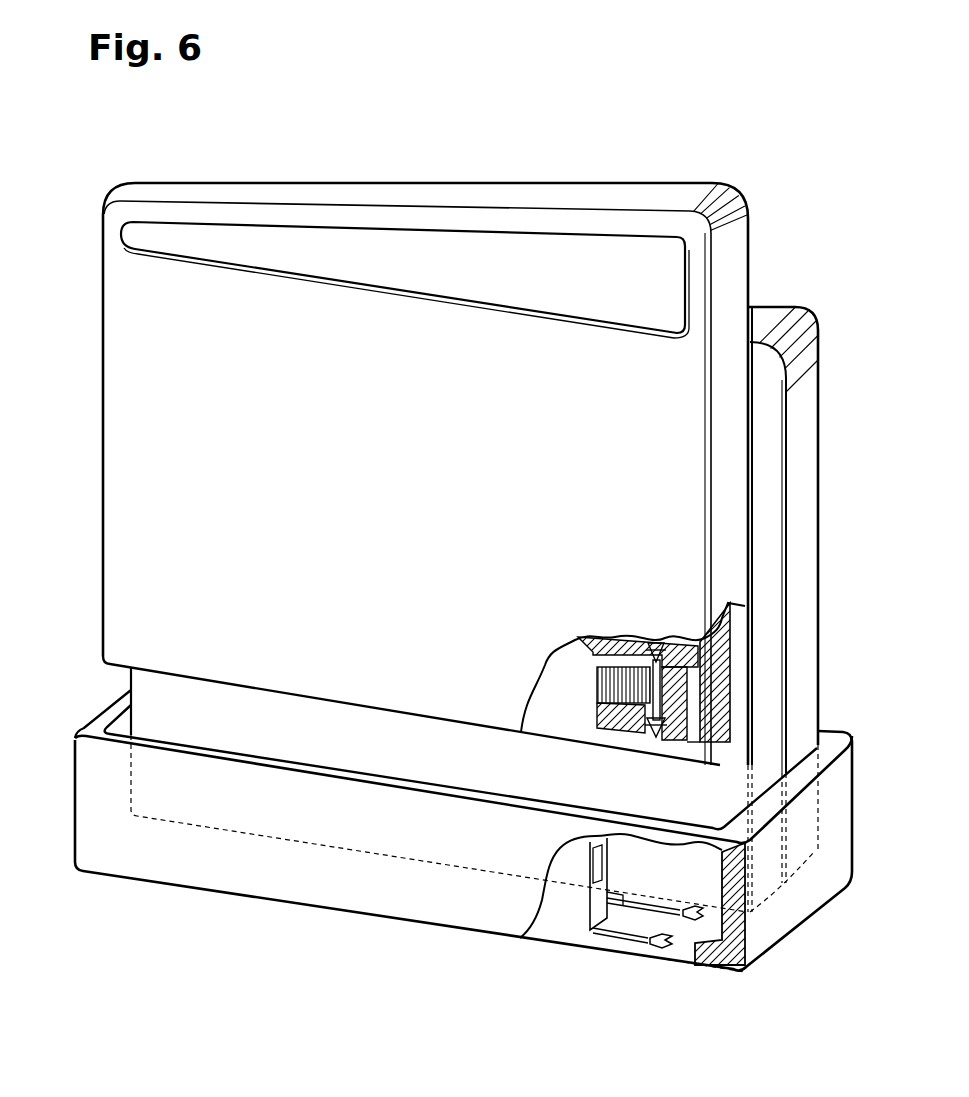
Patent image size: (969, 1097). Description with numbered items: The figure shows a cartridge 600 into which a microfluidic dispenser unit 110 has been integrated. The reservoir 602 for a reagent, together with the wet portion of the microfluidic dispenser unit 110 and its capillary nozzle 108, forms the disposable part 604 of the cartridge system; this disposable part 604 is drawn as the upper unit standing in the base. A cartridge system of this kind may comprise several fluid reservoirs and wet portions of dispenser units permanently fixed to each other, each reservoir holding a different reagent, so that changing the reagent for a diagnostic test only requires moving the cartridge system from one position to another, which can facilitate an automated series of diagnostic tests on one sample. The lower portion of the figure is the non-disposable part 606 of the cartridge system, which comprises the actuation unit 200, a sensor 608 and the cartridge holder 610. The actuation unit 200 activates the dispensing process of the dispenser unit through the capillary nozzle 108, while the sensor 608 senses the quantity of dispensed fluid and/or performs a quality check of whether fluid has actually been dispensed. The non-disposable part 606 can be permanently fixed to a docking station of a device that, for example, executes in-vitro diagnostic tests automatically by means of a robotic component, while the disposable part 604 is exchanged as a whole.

The device assembly 600 is at (488, 180).
The reservoir 602 is at (735, 286).
The disposable part 604 is at (60, 185).
The non-disposable part 606 is at (60, 728).
The sensor 608 is at (637, 930).
The cartridge holder 610 is at (773, 928).
The actuation unit 200 is at (600, 884).
The microfluidic dispenser unit 110 is at (656, 640).
The capillary nozzle 108 is at (657, 738).